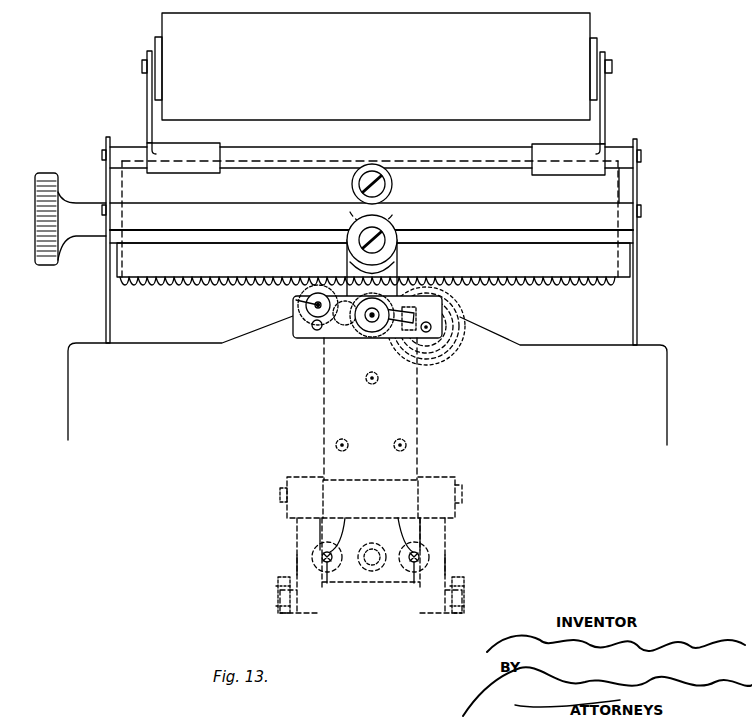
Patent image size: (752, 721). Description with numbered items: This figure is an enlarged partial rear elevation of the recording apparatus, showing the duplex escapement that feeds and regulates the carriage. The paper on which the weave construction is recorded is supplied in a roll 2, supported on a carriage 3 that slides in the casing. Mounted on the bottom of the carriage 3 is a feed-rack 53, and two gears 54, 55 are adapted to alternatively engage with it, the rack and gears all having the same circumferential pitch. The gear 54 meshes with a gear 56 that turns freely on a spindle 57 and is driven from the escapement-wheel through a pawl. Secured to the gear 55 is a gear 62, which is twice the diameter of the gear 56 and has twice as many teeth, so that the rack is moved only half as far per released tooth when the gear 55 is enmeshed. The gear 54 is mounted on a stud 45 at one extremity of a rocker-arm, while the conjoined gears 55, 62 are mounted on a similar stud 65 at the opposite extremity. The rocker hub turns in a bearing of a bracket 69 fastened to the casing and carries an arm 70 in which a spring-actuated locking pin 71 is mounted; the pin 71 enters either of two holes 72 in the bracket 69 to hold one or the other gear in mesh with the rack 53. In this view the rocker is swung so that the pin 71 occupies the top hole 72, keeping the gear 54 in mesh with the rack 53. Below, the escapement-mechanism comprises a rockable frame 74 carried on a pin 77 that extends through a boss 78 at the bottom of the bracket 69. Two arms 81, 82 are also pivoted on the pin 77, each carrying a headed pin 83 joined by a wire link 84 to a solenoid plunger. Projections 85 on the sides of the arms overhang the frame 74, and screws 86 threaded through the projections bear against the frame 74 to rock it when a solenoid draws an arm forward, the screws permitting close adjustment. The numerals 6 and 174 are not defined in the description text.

The roll 2 is at (376, 66).
The carriage 3 is at (637, 181).
The carriage shaft 6 is at (132, 160).
The stud 45 is at (306, 306).
The feed-rack 53 is at (215, 287).
The gear 54 is at (293, 334).
The gear 55 is at (442, 352).
The gear 56 is at (368, 333).
The spindle 57 is at (378, 325).
The gear 62 is at (458, 305).
The stud 65 is at (442, 335).
The bracket 69 is at (418, 414).
The arm 70 is at (343, 323).
The locking pin 71 is at (303, 317).
The holes 72 is at (318, 303).
The rockable frame 74 is at (355, 584).
The pin 77 is at (278, 494).
The boss 78 is at (379, 483).
The arm 81 is at (297, 533).
The arm 82 is at (445, 541).
The headed pin 83 is at (278, 581).
The wire link 84 is at (298, 556).
The projections 85 is at (328, 580).
The screws 86 is at (411, 554).
The frame 174 is at (668, 367).